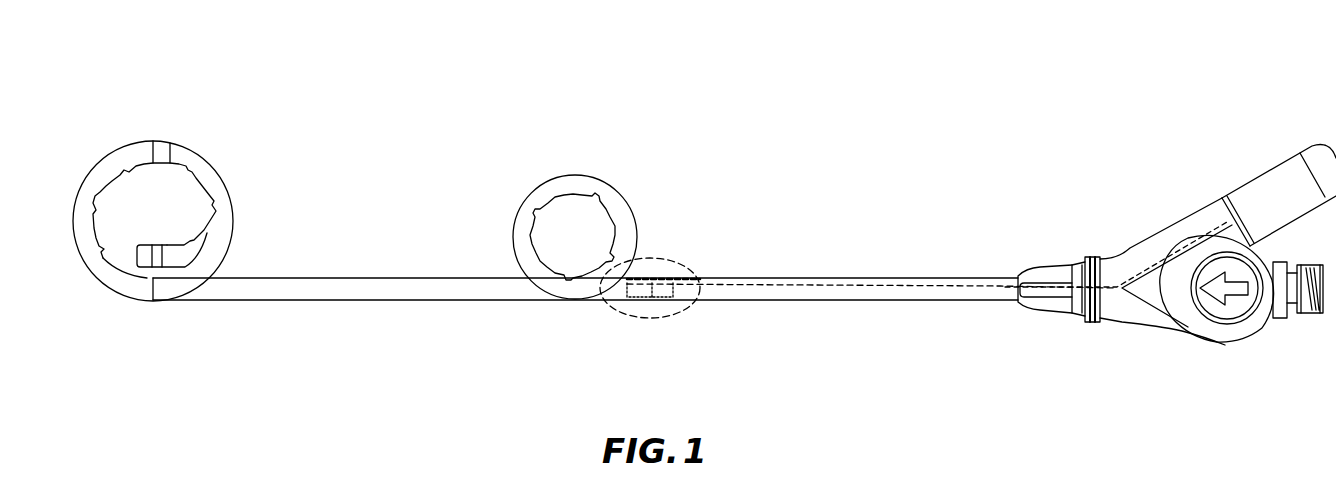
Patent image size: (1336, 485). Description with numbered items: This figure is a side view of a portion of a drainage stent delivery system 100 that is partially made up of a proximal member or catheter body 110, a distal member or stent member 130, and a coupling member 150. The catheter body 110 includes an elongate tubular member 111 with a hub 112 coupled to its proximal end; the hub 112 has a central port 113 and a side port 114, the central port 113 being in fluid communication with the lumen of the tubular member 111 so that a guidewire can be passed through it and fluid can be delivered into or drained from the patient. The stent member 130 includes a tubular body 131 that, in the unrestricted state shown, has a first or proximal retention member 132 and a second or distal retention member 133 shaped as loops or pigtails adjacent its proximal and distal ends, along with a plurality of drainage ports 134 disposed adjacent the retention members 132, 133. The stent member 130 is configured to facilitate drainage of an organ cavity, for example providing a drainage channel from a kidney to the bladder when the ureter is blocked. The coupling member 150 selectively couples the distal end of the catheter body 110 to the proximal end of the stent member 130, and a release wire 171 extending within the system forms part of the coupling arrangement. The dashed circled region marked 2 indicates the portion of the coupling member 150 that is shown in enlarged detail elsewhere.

The drainage stent delivery system 100 is at (867, 173).
The catheter body 110 is at (965, 242).
The tubular member 111 is at (852, 302).
The hub 112 is at (1218, 343).
The central port 113 is at (1304, 318).
The side port 114 is at (1178, 218).
The stent member 130 is at (355, 202).
The tubular body 131 is at (328, 301).
The proximal retention member 132 is at (543, 178).
The distal retention member 133 is at (128, 148).
The drainage ports 134 is at (100, 255).
The coupling member 150 is at (672, 253).
The release wire 171 is at (1150, 262).
The detail view reference 2 is at (683, 263).